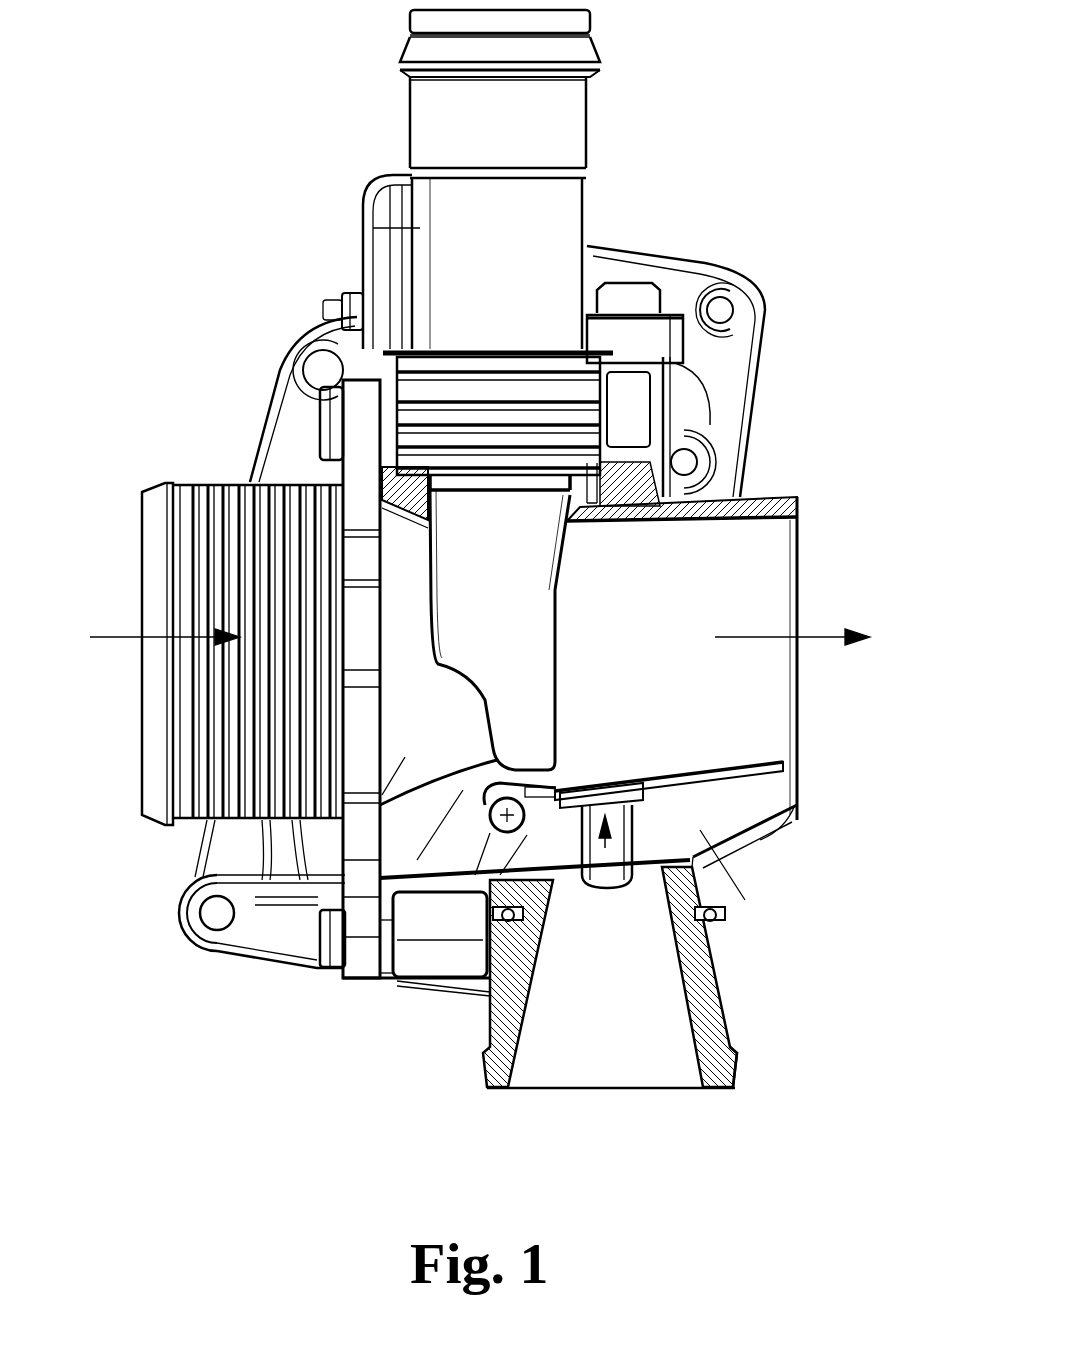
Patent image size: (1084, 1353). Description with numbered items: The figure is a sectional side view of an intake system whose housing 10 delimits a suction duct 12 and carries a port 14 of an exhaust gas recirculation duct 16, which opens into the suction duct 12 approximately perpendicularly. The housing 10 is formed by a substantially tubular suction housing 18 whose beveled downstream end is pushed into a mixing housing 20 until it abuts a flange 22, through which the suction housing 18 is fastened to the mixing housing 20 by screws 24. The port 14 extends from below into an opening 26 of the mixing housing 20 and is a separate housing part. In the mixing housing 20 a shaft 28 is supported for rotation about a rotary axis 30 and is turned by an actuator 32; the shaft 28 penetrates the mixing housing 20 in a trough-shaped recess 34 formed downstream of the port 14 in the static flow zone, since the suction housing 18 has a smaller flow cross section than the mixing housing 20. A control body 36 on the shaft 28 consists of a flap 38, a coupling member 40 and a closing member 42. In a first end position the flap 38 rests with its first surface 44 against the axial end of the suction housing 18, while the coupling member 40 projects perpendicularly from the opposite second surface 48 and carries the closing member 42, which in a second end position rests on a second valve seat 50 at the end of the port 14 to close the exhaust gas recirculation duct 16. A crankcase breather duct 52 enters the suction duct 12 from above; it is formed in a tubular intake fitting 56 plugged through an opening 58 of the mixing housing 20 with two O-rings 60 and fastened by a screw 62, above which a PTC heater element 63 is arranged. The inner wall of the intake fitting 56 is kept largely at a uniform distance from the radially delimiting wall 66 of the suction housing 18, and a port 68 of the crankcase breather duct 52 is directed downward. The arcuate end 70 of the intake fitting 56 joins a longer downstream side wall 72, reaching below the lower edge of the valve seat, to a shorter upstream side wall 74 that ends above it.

The housing 10 is at (790, 410).
The suction duct 12 is at (757, 638).
The port 14 is at (733, 920).
The exhaust gas recirculation duct 16 is at (630, 1023).
The suction housing 18 is at (240, 587).
The mixing housing 20 is at (785, 500).
The flange 22 is at (360, 420).
The screws 24 is at (320, 410).
The opening 26 is at (553, 960).
The shaft 28 is at (447, 868).
The rotary axis 30 is at (460, 963).
The actuator 32 is at (655, 295).
The trough-shaped recess 34 is at (682, 818).
The control body 36 is at (793, 828).
The flap 38 is at (780, 770).
The coupling member 40 is at (607, 773).
The closing member 42 is at (730, 947).
The first surface 44 is at (656, 760).
The second surface 48 is at (613, 883).
The second valve seat 50 is at (673, 890).
The crankcase breather duct 52 is at (440, 205).
The intake fitting 56 is at (540, 213).
The opening 58 is at (615, 408).
The O-rings 60 is at (320, 447).
The screw 62 is at (720, 300).
The PTC heater element 63 is at (392, 255).
The radially delimiting wall 66 is at (360, 800).
The port 68 is at (375, 940).
The end 70 is at (487, 693).
The downstream side wall 72 is at (560, 677).
The upstream side wall 74 is at (437, 583).